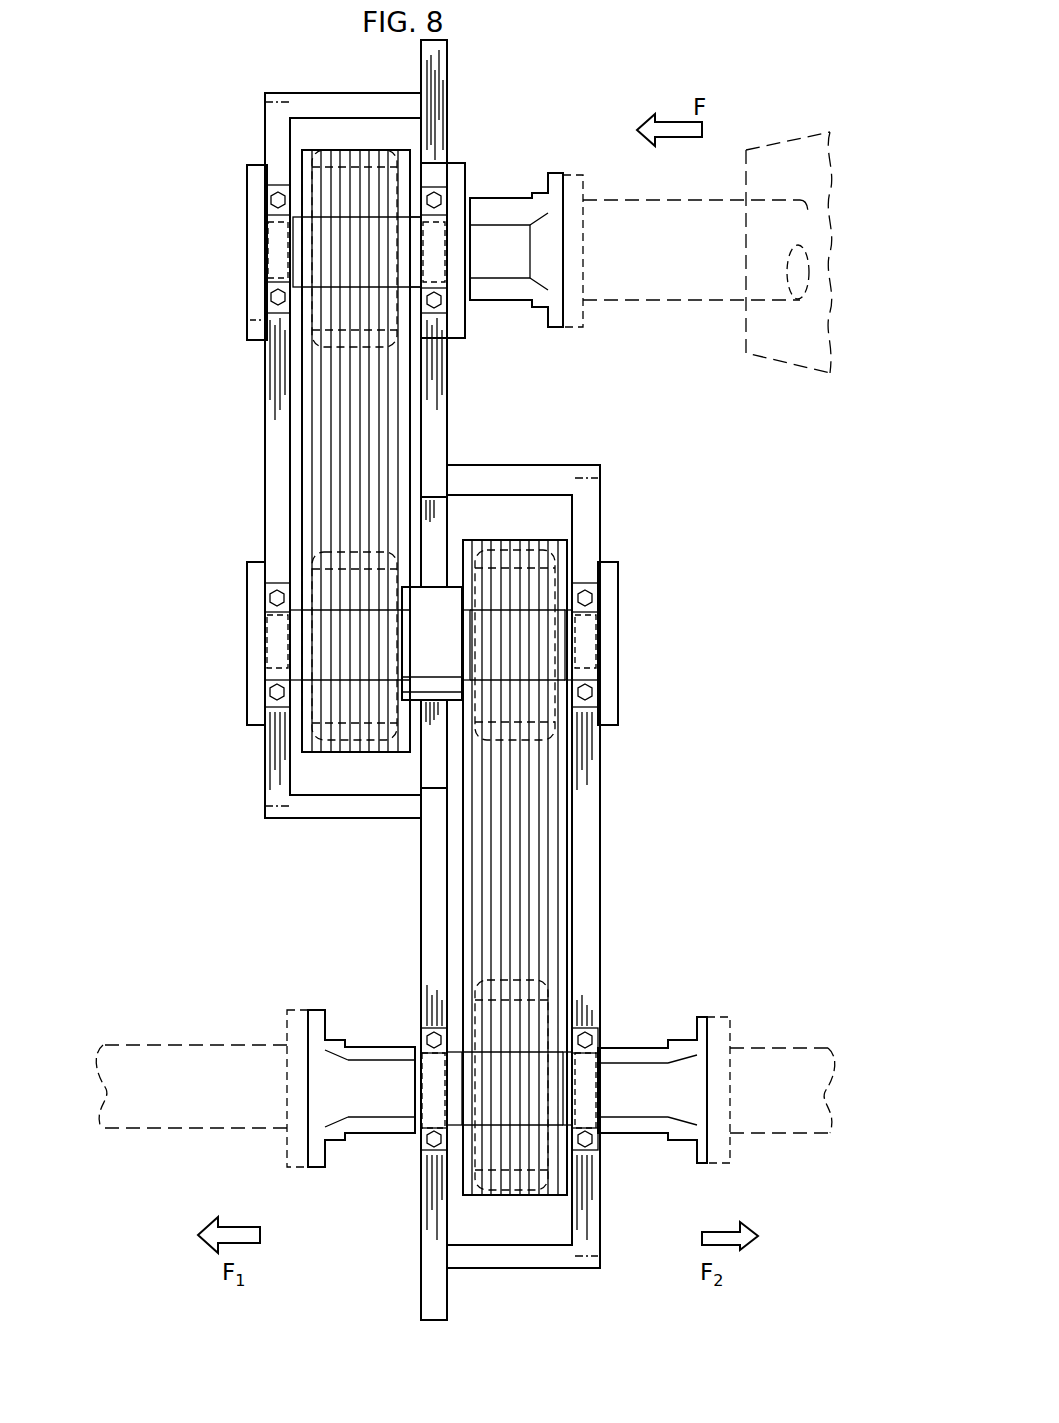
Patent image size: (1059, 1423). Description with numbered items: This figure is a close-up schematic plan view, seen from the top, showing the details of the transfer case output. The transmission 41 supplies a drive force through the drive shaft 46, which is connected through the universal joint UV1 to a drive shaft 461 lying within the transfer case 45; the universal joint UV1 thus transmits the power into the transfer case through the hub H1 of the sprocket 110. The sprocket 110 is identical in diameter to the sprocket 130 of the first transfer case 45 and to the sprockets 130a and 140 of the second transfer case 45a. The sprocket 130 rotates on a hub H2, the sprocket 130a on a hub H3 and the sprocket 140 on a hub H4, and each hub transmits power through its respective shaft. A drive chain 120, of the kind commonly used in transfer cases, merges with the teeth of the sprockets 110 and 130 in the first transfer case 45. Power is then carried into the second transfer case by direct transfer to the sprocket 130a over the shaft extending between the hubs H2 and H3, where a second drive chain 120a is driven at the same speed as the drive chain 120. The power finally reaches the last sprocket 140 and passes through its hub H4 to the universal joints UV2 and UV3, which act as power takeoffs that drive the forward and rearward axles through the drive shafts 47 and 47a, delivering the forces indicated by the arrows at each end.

The transmission 41 is at (782, 158).
The transfer case 45 is at (277, 482).
The second transfer case 45a is at (590, 912).
The drive shaft 46 is at (677, 278).
The drive shaft 461 is at (472, 253).
The drive shaft 47 is at (760, 1063).
The drive shaft 47a is at (185, 1065).
The sprocket 110 is at (333, 160).
The drive chain 120 is at (352, 398).
The second drive chain 120a is at (535, 858).
The sprocket 130 is at (330, 693).
The sprocket 130a is at (522, 587).
The sprocket 140 is at (517, 1028).
The hub H1 is at (300, 248).
The hub H2 is at (298, 658).
The hub H3 is at (575, 668).
The hub H4 is at (453, 1097).
The universal joint UV1 is at (526, 258).
The universal joint UV2 is at (372, 1088).
The universal joint UV3 is at (630, 1085).